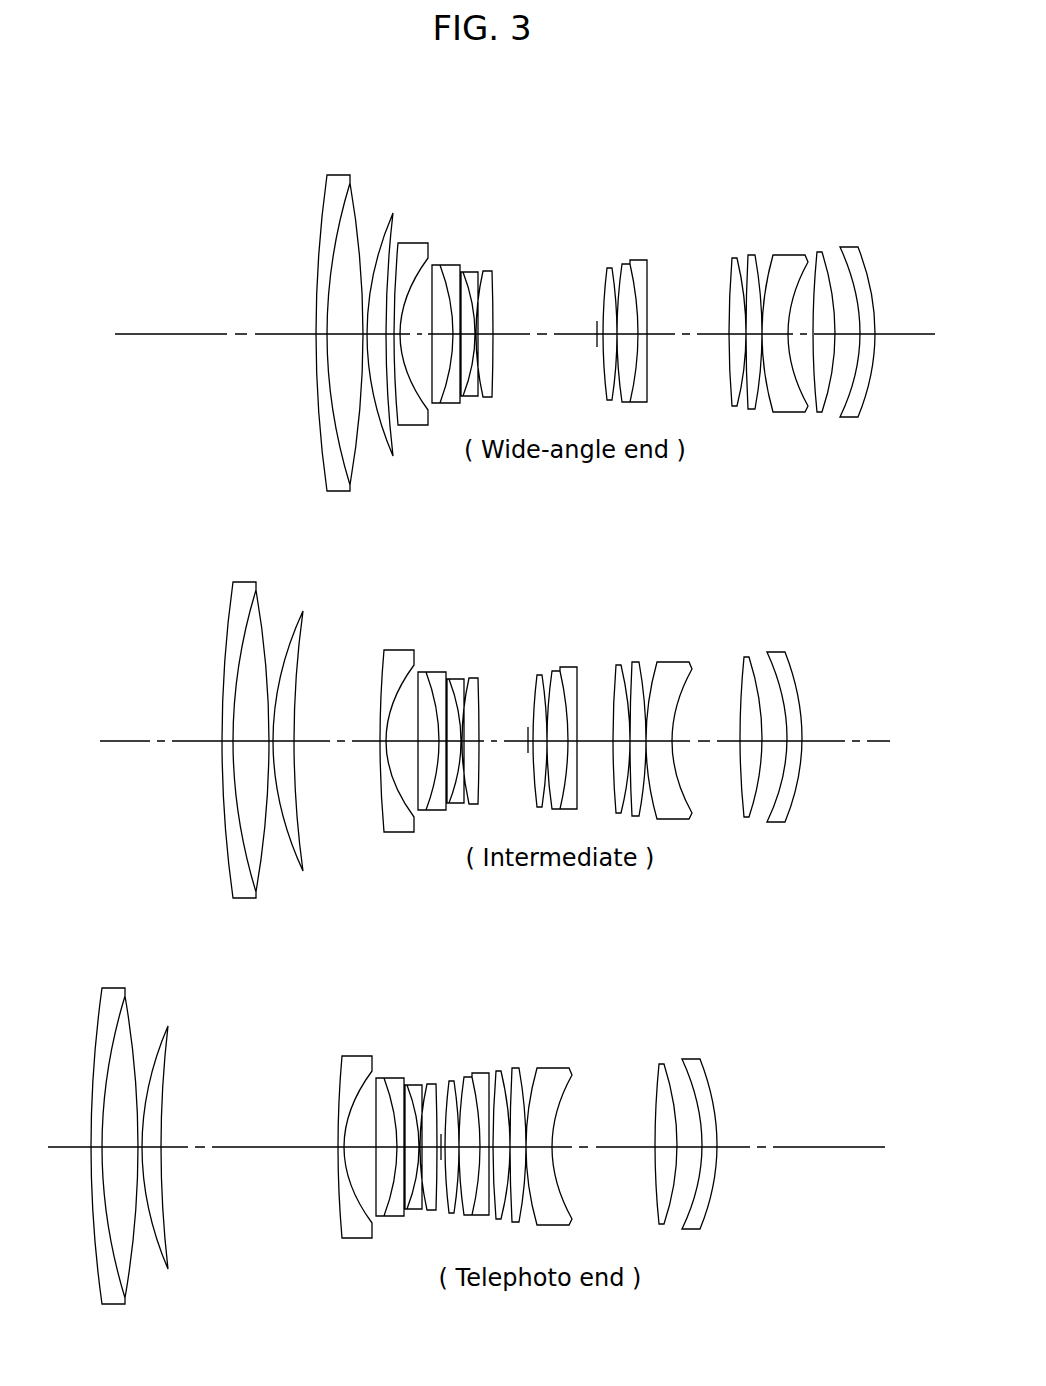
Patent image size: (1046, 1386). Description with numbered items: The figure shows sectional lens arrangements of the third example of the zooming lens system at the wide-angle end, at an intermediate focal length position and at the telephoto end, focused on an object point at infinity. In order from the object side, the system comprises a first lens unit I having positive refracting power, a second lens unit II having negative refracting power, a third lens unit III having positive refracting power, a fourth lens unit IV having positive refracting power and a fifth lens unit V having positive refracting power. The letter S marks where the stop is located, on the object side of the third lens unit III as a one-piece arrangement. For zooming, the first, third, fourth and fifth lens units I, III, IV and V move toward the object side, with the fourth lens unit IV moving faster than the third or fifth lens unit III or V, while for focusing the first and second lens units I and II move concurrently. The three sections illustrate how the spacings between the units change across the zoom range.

The first lens unit I is at (177, 972).
The second lens unit II is at (428, 972).
The third lens unit III is at (485, 972).
The fourth lens unit IV is at (578, 972).
The fifth lens unit V is at (708, 972).
The stop S is at (596, 325).